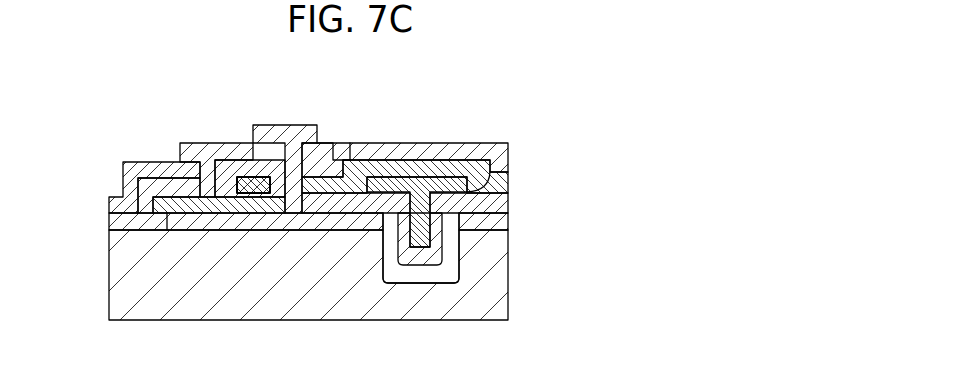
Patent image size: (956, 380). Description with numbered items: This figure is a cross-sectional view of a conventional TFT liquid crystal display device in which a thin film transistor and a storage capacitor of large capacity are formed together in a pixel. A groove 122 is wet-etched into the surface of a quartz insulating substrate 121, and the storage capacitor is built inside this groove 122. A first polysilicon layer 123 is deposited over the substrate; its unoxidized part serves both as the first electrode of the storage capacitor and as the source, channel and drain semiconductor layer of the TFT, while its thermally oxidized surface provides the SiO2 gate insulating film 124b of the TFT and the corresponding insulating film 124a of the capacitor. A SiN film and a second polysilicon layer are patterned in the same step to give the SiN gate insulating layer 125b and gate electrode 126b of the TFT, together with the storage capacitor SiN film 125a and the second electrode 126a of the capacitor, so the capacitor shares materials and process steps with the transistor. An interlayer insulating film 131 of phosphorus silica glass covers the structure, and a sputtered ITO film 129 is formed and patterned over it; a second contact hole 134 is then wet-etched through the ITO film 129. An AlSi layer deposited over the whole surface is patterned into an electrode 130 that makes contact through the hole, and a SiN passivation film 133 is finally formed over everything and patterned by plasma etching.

The insulating substrate 121 is at (432, 302).
The groove 122 is at (452, 270).
The first polysilicon layer 123 is at (492, 217).
The insulating film 124a is at (496, 194).
The SiO2 film 124b is at (236, 203).
The storage capacitor SiN film 125a is at (495, 176).
The SiN gate insulating layer 125b is at (215, 160).
The second electrode 126a is at (481, 181).
The gate electrode 126b is at (240, 188).
The ITO film 129 is at (133, 167).
The electrode 130 is at (297, 203).
The interlayer insulating film 131 is at (425, 165).
The passivation film 133 is at (382, 152).
The second contact hole 134 is at (292, 160).